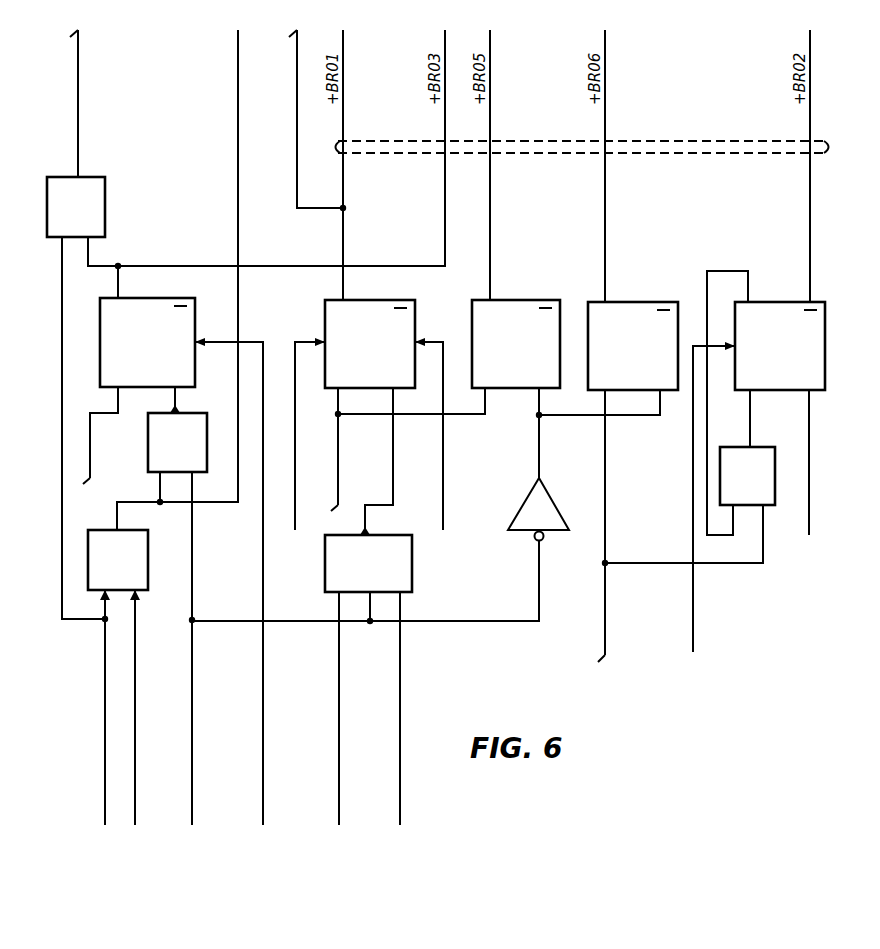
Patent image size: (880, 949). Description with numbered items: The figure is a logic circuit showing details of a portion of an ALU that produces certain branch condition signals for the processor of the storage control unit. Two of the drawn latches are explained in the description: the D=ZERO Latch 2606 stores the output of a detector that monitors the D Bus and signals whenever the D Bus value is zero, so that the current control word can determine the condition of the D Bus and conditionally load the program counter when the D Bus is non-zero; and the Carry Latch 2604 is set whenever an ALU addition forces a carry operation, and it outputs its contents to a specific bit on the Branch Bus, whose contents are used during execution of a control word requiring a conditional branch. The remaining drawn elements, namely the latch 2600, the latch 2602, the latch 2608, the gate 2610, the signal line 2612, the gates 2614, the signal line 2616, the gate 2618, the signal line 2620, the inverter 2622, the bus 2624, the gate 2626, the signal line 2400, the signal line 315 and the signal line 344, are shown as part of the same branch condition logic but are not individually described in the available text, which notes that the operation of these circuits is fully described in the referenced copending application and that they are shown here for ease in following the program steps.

The shift extend flip-flop 2600 is at (150, 300).
The carry save flip-flop 2602 is at (400, 288).
The Carry Latch 2604 is at (518, 300).
The D=ZERO Latch 2606 is at (643, 300).
The D not equal 0 flip-flop 2608 is at (825, 302).
The OR gate 2610 is at (150, 585).
The +SHFT RT signal line 2612 is at (238, 213).
The AND gate 2614 is at (105, 190).
The +EXTEND IN signal line 2616 is at (78, 126).
The AND gate 2618 is at (412, 584).
The -CARRY IN signal line 2620 is at (296, 168).
The inverter 2622 is at (527, 496).
The branch condition bus 2624 is at (668, 141).
The AND gate 2626 is at (743, 452).
The +FILE CLK EN signal line 2400 is at (192, 670).
The -SPOP 29 signal line 315 is at (263, 704).
The +IR 16 signal line 344 is at (340, 695).